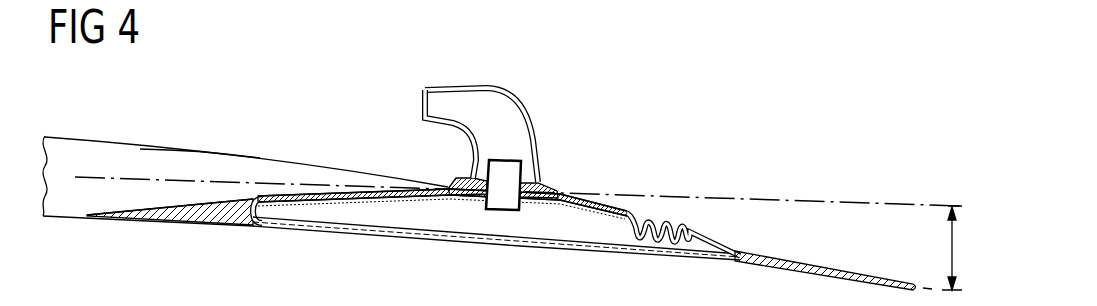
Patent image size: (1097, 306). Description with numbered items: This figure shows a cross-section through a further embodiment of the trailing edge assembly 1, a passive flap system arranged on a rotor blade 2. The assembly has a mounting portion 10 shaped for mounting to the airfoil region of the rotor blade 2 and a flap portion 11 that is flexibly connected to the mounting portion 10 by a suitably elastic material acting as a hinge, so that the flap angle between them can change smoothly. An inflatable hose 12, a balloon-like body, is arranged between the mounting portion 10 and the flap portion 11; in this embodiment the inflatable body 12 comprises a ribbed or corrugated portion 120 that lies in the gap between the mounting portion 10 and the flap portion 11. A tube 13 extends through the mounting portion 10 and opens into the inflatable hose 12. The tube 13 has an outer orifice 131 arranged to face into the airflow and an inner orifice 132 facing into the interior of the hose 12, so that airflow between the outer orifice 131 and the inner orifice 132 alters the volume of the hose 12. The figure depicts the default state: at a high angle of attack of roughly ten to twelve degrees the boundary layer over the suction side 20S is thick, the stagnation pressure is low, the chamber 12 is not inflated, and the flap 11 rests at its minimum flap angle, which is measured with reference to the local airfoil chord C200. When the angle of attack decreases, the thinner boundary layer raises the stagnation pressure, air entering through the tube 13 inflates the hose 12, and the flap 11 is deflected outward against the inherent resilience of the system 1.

The trailing edge assembly 1 is at (323, 158).
The rotor blade 2 is at (68, 205).
The mounting portion 10 is at (244, 228).
The flap portion 11 is at (852, 270).
The inflatable hose 12 is at (586, 230).
The tube 13 is at (502, 118).
The corrugated portion 120 is at (672, 218).
The outer orifice 131 is at (423, 103).
The inner orifice 132 is at (493, 206).
The suction side 20S is at (212, 151).
The local airfoil chord C200 is at (90, 176).